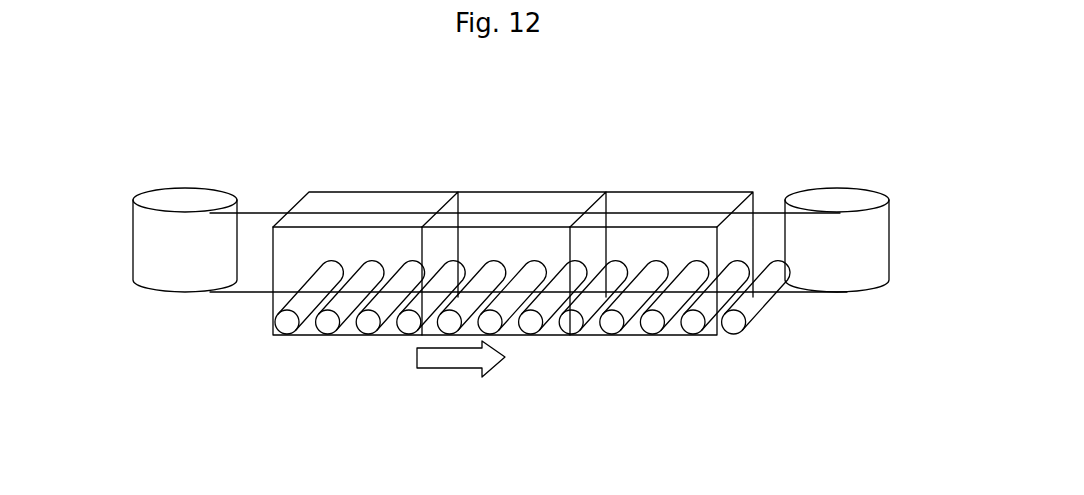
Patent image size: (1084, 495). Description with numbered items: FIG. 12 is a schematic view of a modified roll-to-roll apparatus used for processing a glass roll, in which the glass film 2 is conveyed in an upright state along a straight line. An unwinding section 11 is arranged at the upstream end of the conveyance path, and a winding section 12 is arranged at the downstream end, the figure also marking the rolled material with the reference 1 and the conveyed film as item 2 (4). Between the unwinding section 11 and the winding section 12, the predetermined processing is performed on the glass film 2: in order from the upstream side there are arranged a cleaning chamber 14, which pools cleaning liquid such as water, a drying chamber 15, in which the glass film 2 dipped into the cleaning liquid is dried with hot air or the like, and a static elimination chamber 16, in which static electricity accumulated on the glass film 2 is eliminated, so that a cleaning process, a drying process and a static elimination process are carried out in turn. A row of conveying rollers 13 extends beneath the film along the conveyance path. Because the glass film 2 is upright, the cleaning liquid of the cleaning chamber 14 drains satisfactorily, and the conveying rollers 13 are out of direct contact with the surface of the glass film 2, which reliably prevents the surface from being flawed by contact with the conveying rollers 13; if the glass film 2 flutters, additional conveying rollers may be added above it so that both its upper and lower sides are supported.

The substrate / web material 1 is at (162, 222).
The glass film 2 is at (253, 278).
The belt 4 is at (478, 294).
The unwinding section 11 is at (197, 178).
The winding section 12 is at (832, 178).
The conveying rollers 13 is at (537, 335).
The cleaning chamber 14 is at (358, 196).
The drying chamber 15 is at (499, 200).
The static elimination chamber 16 is at (638, 200).